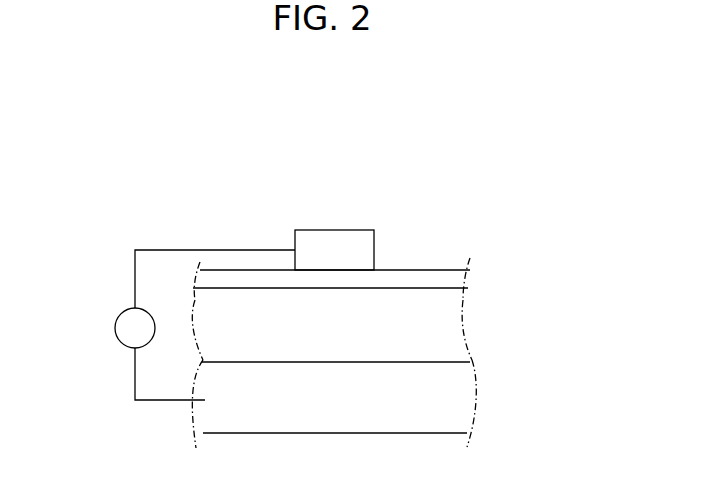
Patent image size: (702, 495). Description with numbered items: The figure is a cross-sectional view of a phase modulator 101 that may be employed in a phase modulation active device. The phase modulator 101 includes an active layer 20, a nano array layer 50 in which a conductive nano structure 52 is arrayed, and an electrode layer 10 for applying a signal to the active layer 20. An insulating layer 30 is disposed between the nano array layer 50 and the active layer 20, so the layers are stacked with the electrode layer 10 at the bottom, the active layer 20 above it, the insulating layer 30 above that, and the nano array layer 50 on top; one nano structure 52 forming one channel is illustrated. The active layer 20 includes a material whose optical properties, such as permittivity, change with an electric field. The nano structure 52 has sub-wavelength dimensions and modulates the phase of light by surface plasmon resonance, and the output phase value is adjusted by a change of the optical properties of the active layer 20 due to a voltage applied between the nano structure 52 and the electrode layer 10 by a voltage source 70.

The phase modulator 101 is at (488, 171).
The electrode layer 10 is at (455, 398).
The active layer 20 is at (455, 325).
The insulating layer 30 is at (455, 281).
The nano array layer 50 is at (376, 250).
The nano structure 52 is at (337, 242).
The voltage source 70 is at (114, 328).